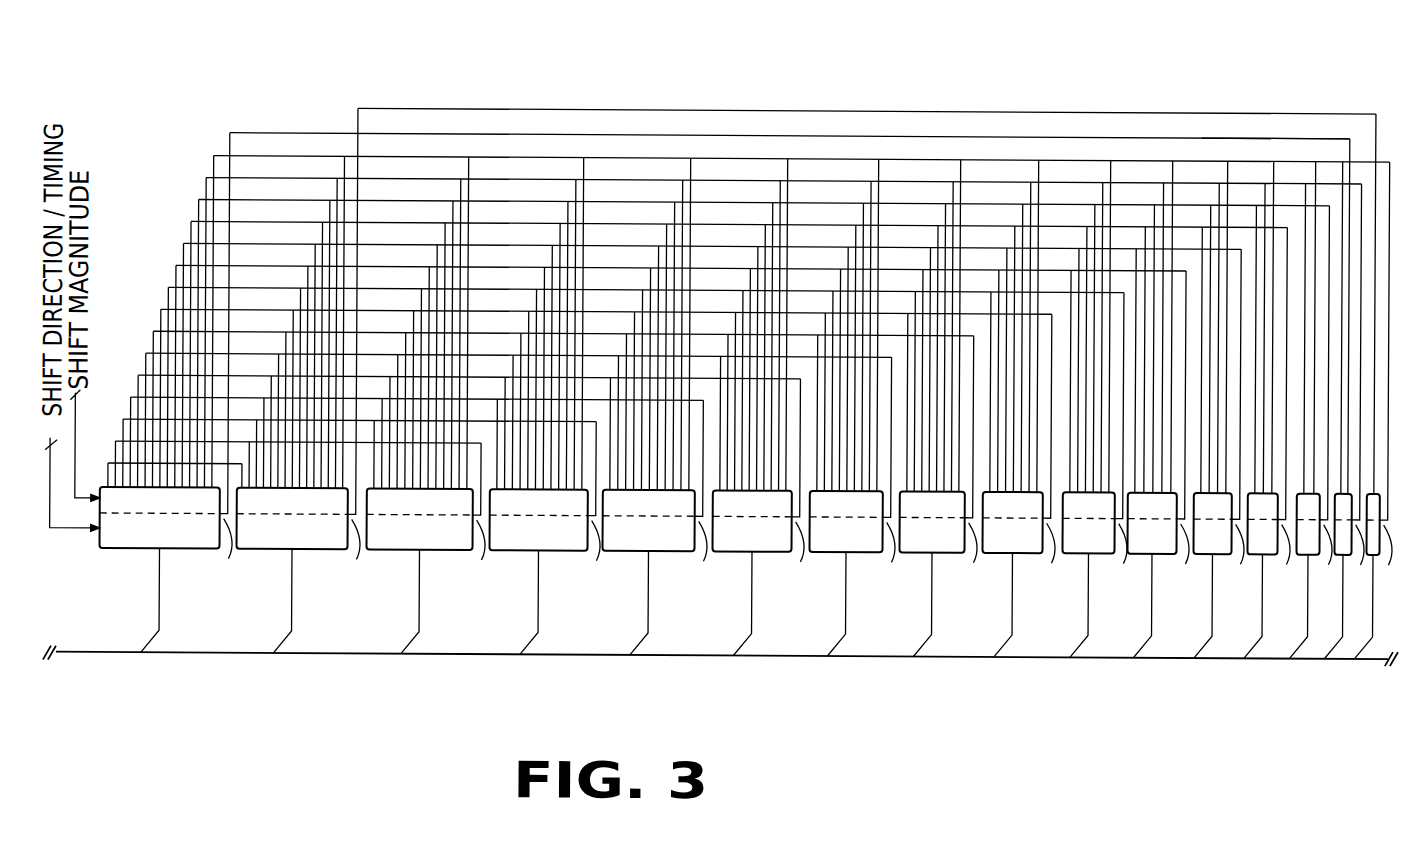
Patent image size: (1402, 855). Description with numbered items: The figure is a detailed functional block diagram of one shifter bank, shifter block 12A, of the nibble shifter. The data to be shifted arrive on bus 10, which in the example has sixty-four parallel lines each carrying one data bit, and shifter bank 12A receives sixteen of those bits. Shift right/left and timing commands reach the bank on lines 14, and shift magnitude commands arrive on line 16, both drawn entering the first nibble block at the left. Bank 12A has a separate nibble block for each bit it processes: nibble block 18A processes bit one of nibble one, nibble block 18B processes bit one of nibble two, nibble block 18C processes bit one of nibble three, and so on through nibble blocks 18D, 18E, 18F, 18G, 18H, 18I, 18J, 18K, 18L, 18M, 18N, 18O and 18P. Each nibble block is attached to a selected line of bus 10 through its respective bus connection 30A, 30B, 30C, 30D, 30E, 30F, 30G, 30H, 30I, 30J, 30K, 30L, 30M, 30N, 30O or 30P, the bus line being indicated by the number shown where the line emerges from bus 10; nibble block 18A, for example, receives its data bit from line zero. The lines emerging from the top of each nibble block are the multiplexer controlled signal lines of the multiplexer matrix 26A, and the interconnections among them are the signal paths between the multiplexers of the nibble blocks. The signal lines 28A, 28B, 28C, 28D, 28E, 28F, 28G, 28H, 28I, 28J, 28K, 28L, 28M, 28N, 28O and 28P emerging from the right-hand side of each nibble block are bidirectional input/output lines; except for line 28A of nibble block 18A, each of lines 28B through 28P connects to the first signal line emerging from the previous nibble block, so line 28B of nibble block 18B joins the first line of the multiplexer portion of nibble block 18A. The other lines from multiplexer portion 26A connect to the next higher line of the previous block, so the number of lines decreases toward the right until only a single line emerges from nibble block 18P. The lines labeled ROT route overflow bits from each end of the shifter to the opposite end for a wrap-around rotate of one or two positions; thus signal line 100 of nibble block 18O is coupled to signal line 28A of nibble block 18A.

The bus 10 is at (95, 653).
The shifter bank 12A is at (285, 80).
The shift right/left and timing command lines 14 is at (50, 497).
The shift magnitude command line 16 is at (79, 428).
The nibble block 18A is at (165, 340).
The nibble block 18B is at (313, 544).
The nibble block 18C is at (441, 544).
The nibble block 18D is at (560, 544).
The nibble block 18E is at (670, 544).
The nibble block 18F is at (773, 544).
The nibble block 18G is at (867, 544).
The nibble block 18H is at (953, 544).
The nibble block 18I is at (1031, 544).
The nibble block 18J is at (1107, 544).
The nibble block 18K is at (1140, 544).
The nibble block 18L is at (1200, 544).
The nibble block 18M is at (1252, 544).
The nibble block 18N is at (1312, 358).
The nibble block 18O is at (1347, 562).
The nibble block 18P is at (1378, 562).
The multiplexer matrix 26A is at (160, 501).
The signal line 28A is at (226, 554).
The signal line 28B is at (344, 554).
The signal line 28C is at (467, 555).
The signal line 28D is at (579, 556).
The signal line 28E is at (687, 556).
The signal line 28F is at (788, 557).
The signal line 28G is at (876, 557).
The signal line 28H is at (958, 556).
The signal line 28I is at (1038, 556).
The signal line 28J is at (1110, 557).
The signal line 28K is at (1175, 557).
The signal line 28L is at (1234, 557).
The signal line 28M is at (1284, 556).
The signal line 28N is at (1325, 555).
The signal line 28O is at (1357, 555).
The signal line 28P is at (1388, 554).
The bus connection 30A is at (147, 567).
The bus connection 30B is at (279, 567).
The bus connection 30C is at (407, 567).
The bus connection 30D is at (526, 567).
The bus connection 30E is at (636, 567).
The bus connection 30F is at (739, 567).
The bus connection 30G is at (833, 567).
The bus connection 30H is at (919, 567).
The bus connection 30I is at (1000, 567).
The bus connection 30J is at (1076, 567).
The bus connection 30K is at (1139, 567).
The bus connection 30L is at (1192, 606).
The bus connection 30M is at (1242, 606).
The bus connection 30N is at (1288, 606).
The bus connection 30O is at (1323, 607).
The bus connection 30P is at (1353, 607).
The signal line 100 is at (1248, 131).